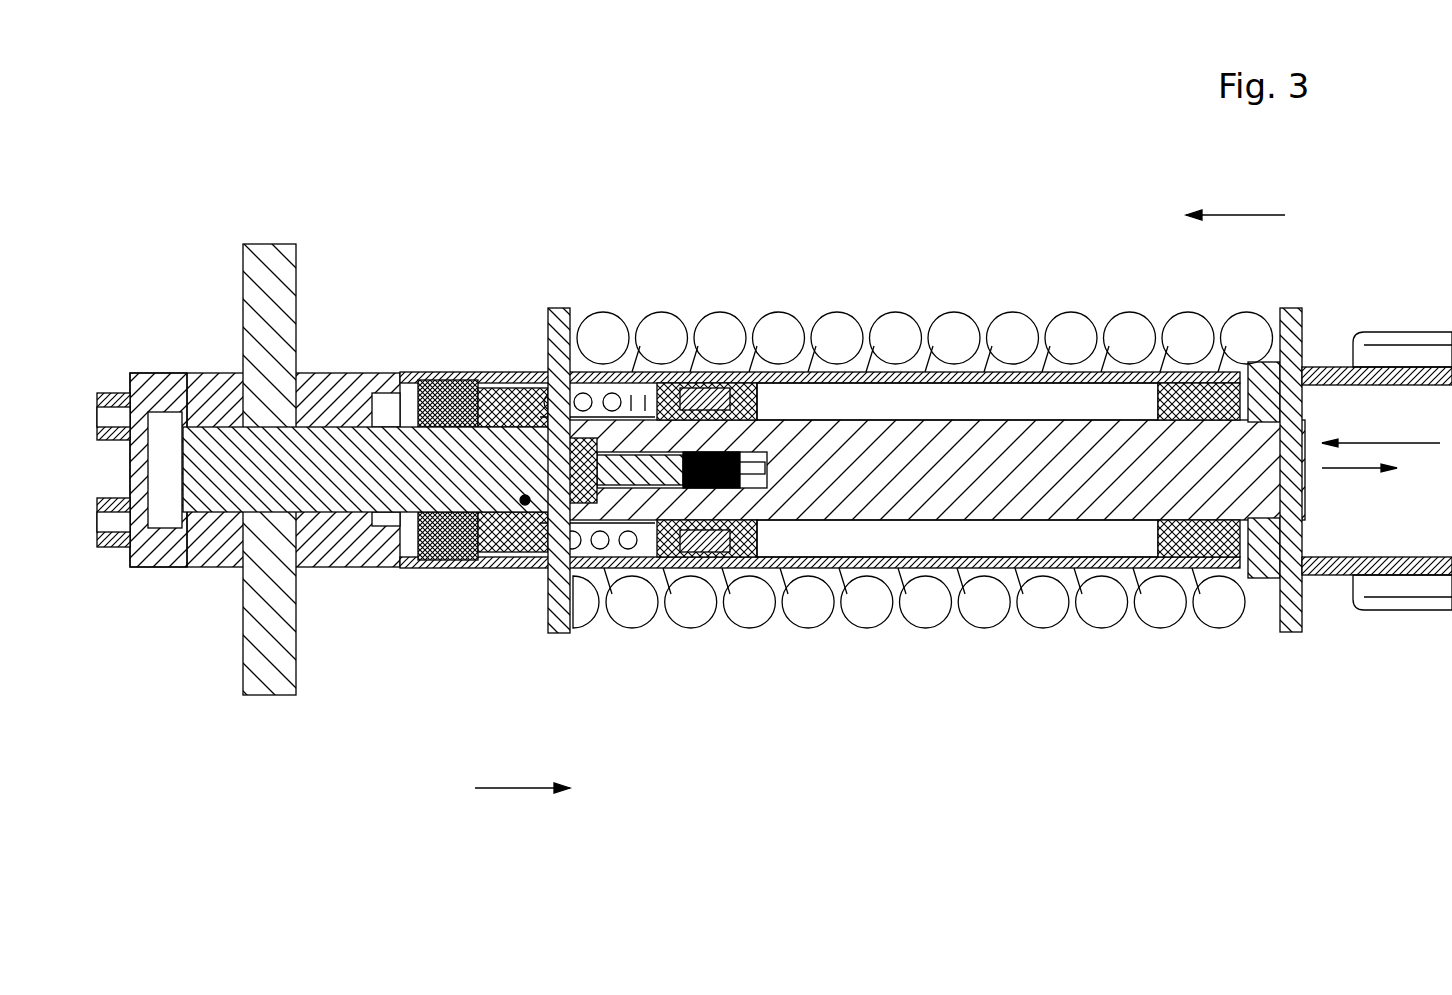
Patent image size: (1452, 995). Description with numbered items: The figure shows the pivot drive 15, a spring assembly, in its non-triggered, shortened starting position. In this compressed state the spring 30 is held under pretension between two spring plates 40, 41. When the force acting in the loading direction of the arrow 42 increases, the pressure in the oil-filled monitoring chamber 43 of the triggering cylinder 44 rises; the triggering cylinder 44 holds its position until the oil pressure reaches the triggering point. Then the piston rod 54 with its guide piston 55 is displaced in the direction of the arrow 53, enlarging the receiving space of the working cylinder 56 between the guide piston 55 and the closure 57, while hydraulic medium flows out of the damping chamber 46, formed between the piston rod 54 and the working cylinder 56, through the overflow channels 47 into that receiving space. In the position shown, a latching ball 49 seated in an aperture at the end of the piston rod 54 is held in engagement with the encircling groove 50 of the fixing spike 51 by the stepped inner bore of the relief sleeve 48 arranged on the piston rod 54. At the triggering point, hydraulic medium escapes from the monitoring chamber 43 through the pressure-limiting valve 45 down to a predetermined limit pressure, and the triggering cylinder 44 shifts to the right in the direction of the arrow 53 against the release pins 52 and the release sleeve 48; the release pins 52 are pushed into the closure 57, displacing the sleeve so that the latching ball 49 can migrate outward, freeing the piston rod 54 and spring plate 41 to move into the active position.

The pivot drive 15 is at (646, 178).
The spring 30 is at (930, 607).
The spring plate 40 is at (560, 310).
The spring plate 41 is at (1292, 612).
The arrow 42 is at (1238, 215).
The monitoring chamber 43 is at (162, 505).
The triggering cylinder 44 is at (227, 373).
The pressure-limiting valve 45 is at (115, 418).
The damping chamber 46 is at (993, 397).
The overflow channels 47 is at (753, 490).
The relief sleeve 48 is at (558, 405).
The latching ball 49 is at (523, 522).
The encircling groove 50 is at (500, 372).
The fixing spike 51 is at (299, 496).
The release pins 52 is at (383, 400).
The arrow 53 is at (510, 788).
The piston rod 54 is at (1108, 497).
The guide piston 55 is at (692, 410).
The working cylinder 56 is at (893, 377).
The closure 57 is at (435, 535).